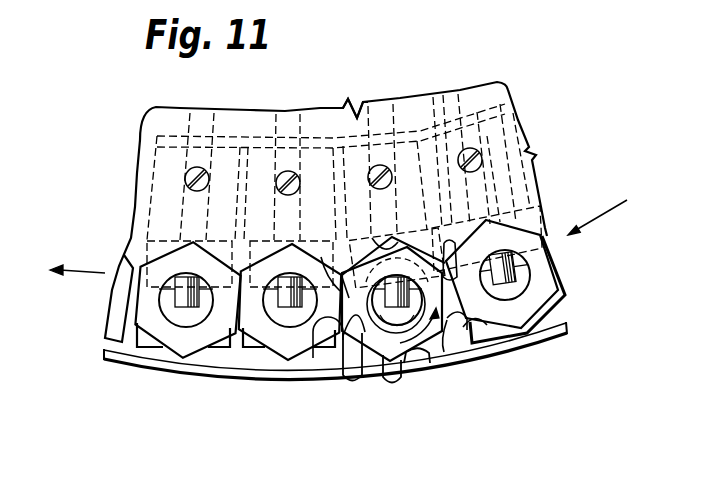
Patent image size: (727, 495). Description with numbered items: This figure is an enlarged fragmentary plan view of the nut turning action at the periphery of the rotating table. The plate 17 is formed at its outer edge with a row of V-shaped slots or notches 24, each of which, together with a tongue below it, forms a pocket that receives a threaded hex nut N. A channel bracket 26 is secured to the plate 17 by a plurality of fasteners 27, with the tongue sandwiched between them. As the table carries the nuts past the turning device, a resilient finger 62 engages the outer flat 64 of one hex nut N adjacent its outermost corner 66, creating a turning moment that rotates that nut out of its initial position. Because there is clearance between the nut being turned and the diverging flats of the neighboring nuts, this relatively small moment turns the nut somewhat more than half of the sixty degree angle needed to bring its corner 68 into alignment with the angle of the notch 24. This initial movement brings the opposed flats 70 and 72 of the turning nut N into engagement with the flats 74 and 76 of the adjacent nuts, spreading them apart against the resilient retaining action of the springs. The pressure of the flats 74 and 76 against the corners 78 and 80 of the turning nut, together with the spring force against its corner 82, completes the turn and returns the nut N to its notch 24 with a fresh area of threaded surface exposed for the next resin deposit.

The plate 17 is at (522, 122).
The channel bracket 26 is at (357, 137).
The fasteners 27 is at (277, 175).
The hex nut N is at (196, 344).
The flat 72 is at (338, 268).
The V-shaped slot or notch 24 is at (375, 243).
The corner 68 is at (407, 247).
The corner 78 is at (452, 242).
The corner 80 is at (323, 334).
The flat 76 is at (364, 334).
The corner 82 is at (384, 352).
The outer flat 64 is at (392, 368).
The resilient finger 62 is at (422, 348).
The outermost corner 66 is at (455, 332).
The flat 70 is at (463, 338).
The flat 74 is at (484, 347).